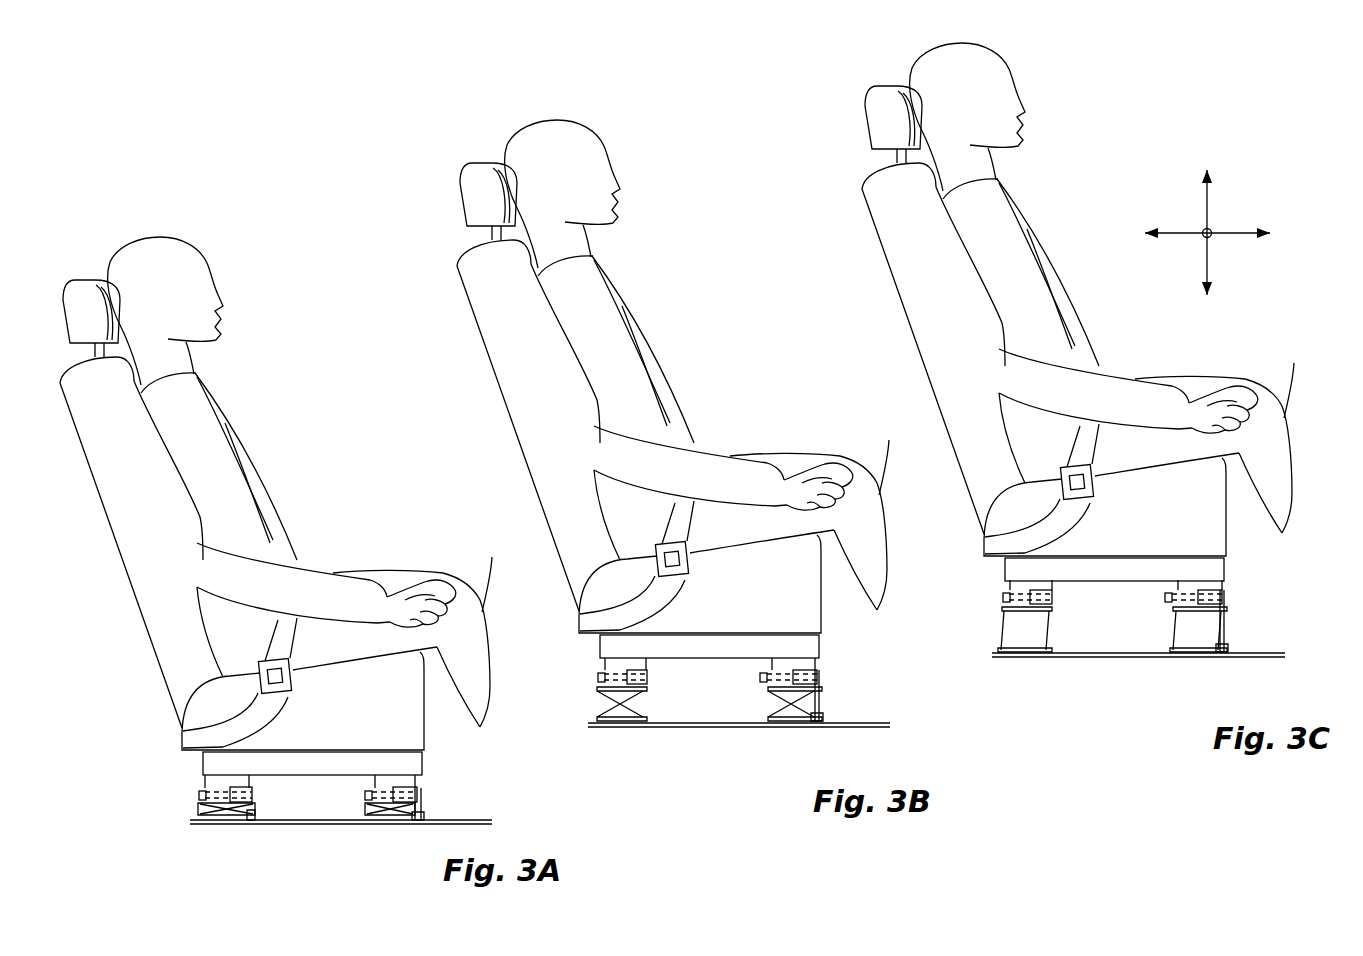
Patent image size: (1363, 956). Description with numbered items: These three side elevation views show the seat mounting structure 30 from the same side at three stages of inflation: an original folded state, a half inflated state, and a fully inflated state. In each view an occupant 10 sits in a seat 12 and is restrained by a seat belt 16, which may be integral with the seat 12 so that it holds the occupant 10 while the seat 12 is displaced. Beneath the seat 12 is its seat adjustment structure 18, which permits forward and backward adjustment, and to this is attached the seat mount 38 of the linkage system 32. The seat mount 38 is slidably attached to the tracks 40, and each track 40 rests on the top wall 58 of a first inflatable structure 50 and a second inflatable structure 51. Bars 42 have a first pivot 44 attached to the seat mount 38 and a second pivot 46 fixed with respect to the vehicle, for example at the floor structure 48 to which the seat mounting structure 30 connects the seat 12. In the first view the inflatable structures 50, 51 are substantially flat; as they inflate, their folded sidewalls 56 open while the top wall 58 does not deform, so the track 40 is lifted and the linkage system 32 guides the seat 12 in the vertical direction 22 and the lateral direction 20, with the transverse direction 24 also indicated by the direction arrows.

In FIG. 3A, the occupant 10 is at (170, 250).
In FIG. 3B, the occupant 10 is at (697, 343).
In FIG. 3C, the occupant 10 is at (1102, 282).
In FIG. 3A, the seat 12 is at (93, 420).
In FIG. 3B, the seat 12 is at (487, 387).
In FIG. 3C, the seat 12 is at (890, 310).
In FIG. 3A, the seat belt 16 is at (237, 418).
In FIG. 3B, the seat belt 16 is at (665, 443).
In FIG. 3C, the seat belt 16 is at (1075, 360).
In FIG. 3A, the seat adjustment structure 18 is at (212, 765).
In FIG. 3B, the seat adjustment structure 18 is at (672, 594).
In FIG. 3C, the seat adjustment structure 18 is at (1076, 517).
In FIG. 3C, the lateral direction 20 is at (1212, 230).
In FIG. 3C, the vertical direction 22 is at (1205, 256).
In FIG. 3C, the transverse direction 24 is at (1235, 236).
In FIG. 3A, the seat mounting structure 30 is at (104, 817).
In FIG. 3B, the seat mounting structure 30 is at (590, 726).
In FIG. 3C, the seat mounting structure 30 is at (982, 649).
In FIG. 3A, the linkage system 32 is at (498, 797).
In FIG. 3B, the linkage system 32 is at (898, 710).
In FIG. 3C, the linkage system 32 is at (1303, 630).
In FIG. 3A, the seat mount 38 is at (215, 803).
In FIG. 3B, the seat mount 38 is at (612, 682).
In FIG. 3C, the seat mount 38 is at (1018, 600).
In FIG. 3A, the track 40 is at (215, 790).
In FIG. 3B, the track 40 is at (612, 673).
In FIG. 3C, the track 40 is at (1018, 592).
In FIG. 3A, the bar 42 is at (420, 800).
In FIG. 3B, the bar 42 is at (818, 686).
In FIG. 3C, the bar 42 is at (1225, 606).
In FIG. 3A, the first pivot 44 is at (415, 795).
In FIG. 3B, the first pivot 44 is at (818, 678).
In FIG. 3C, the first pivot 44 is at (1225, 598).
In FIG. 3A, the second pivot 46 is at (425, 815).
In FIG. 3B, the second pivot 46 is at (822, 705).
In FIG. 3C, the second pivot 46 is at (1228, 636).
In FIG. 3A, the floor structure 48 is at (280, 825).
In FIG. 3B, the floor structure 48 is at (668, 730).
In FIG. 3C, the floor structure 48 is at (1075, 660).
In FIG. 3A, the first inflatable structure 50 is at (200, 812).
In FIG. 3B, the first inflatable structure 50 is at (600, 691).
In FIG. 3C, the first inflatable structure 50 is at (1004, 611).
In FIG. 3A, the second inflatable structure 51 is at (396, 808).
In FIG. 3B, the second inflatable structure 51 is at (783, 705).
In FIG. 3C, the second inflatable structure 51 is at (1180, 632).
In FIG. 3A, the folded sidewall 56 is at (384, 809).
In FIG. 3B, the folded sidewall 56 is at (770, 700).
In FIG. 3C, the folded sidewall 56 is at (1172, 625).
In FIG. 3A, the top wall 58 is at (380, 812).
In FIG. 3B, the top wall 58 is at (755, 678).
In FIG. 3C, the top wall 58 is at (1155, 600).